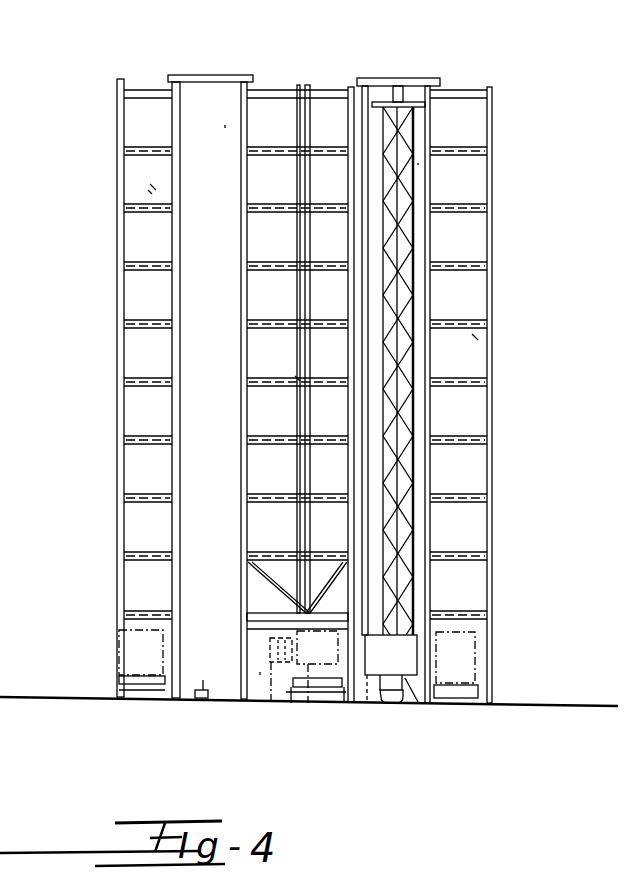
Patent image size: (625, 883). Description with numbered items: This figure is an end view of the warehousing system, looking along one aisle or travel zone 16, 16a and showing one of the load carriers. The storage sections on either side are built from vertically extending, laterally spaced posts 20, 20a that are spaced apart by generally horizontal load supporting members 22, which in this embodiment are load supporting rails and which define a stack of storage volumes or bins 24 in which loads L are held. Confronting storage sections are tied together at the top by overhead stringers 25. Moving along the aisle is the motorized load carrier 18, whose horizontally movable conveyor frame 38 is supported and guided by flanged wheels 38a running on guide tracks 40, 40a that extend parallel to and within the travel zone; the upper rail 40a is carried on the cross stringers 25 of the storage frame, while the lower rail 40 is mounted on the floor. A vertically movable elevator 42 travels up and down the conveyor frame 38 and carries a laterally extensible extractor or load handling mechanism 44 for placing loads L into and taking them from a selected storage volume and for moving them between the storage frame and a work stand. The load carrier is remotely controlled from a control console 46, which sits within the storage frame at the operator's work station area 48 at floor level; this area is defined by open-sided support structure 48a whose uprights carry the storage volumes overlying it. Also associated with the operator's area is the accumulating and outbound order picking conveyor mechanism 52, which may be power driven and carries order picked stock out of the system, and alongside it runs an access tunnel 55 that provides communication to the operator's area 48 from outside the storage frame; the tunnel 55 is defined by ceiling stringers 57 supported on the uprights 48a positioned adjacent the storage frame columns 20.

The aisle or travel zone 16 is at (418, 163).
The aisle or travel zone 16a is at (225, 125).
The motorized load carrier 18 is at (375, 88).
The posts 20 is at (362, 120).
The posts 20a is at (307, 85).
The load supporting members 22 is at (152, 194).
The storage volumes or bins 24 is at (282, 188).
The overhead stringers 25 is at (178, 74).
The conveyor frame 38 is at (414, 258).
The flanged wheels 38a is at (412, 80).
The lower guide track 40 is at (203, 689).
The upper guide track 40a is at (397, 86).
The elevator 42 is at (413, 703).
The extractor or load handling mechanism 44 is at (365, 705).
The remote control console 46 is at (258, 641).
The operator's work station area 48 is at (260, 675).
The support structure 48a is at (322, 552).
The order picking conveyor mechanism 52 is at (320, 652).
The access tunnel 55 is at (262, 629).
The ceiling stringers 57 is at (313, 606).
The loads L is at (130, 648).